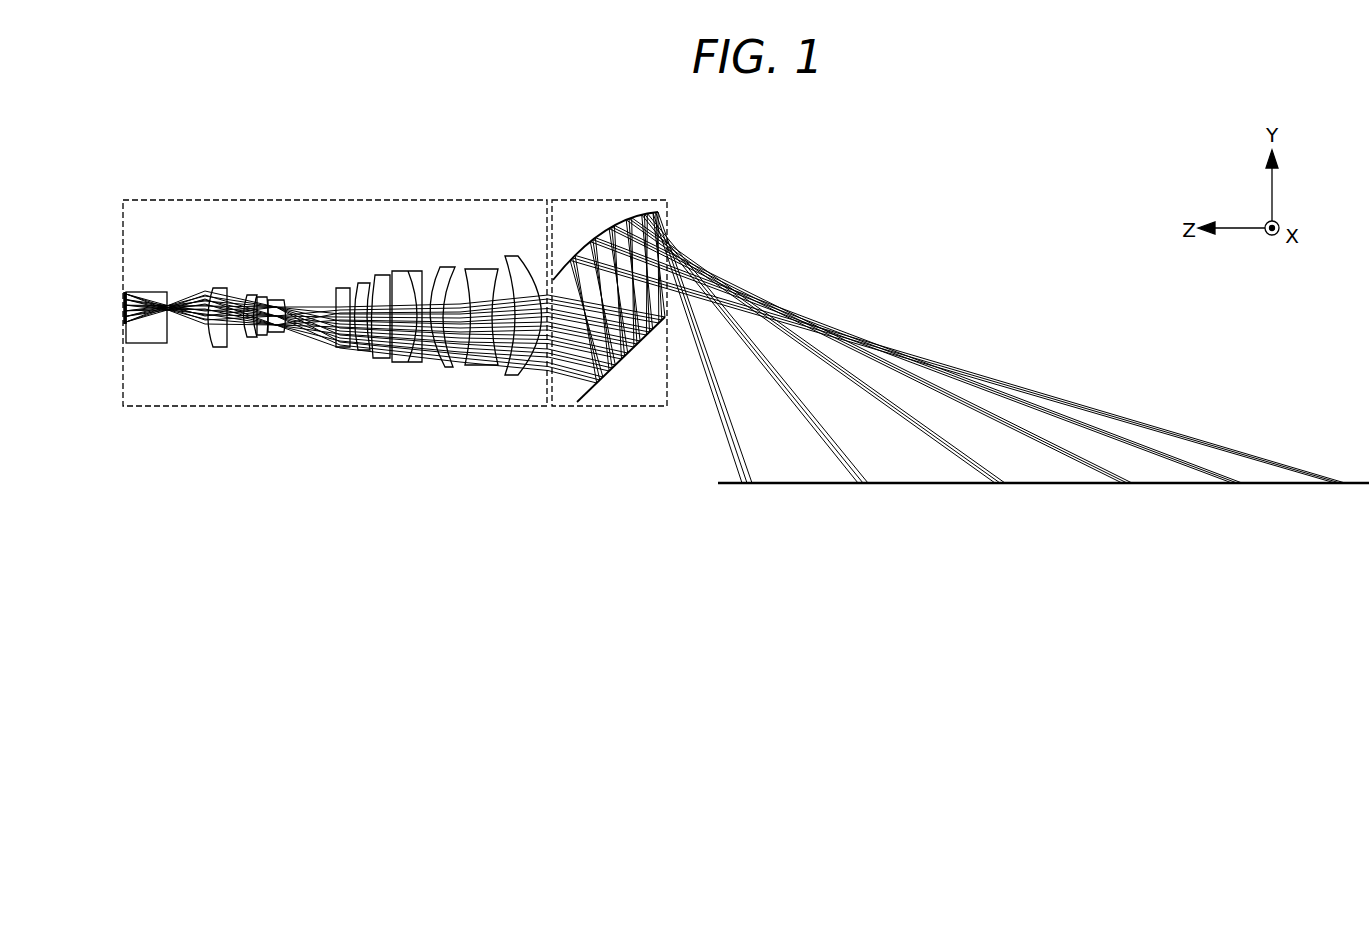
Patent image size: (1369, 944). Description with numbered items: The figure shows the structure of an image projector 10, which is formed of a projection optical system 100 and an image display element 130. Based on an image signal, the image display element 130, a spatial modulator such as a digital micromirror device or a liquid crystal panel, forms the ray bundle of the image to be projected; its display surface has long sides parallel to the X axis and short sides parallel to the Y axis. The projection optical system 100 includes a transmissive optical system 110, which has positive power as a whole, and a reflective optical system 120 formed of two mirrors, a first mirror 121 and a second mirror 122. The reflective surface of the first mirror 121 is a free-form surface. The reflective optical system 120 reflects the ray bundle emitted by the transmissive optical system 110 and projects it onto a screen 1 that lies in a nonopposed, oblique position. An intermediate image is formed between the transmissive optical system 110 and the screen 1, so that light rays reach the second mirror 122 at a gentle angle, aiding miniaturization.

The screen 1 is at (897, 485).
The image projector 10 is at (318, 502).
The projection optical system 100 is at (582, 480).
The transmissive optical system 110 is at (515, 407).
The reflective optical system 120 is at (563, 407).
The first mirror 121 is at (624, 368).
The second mirror 122 is at (637, 213).
The image display element 130 is at (121, 302).